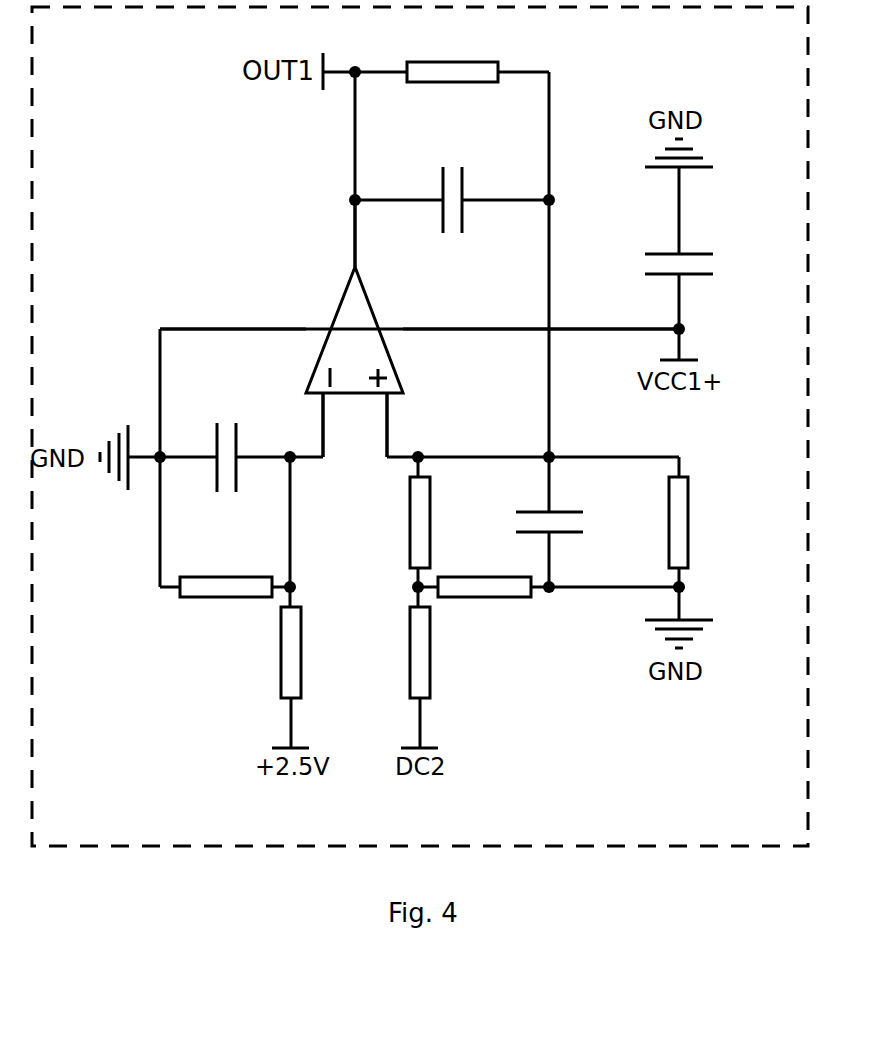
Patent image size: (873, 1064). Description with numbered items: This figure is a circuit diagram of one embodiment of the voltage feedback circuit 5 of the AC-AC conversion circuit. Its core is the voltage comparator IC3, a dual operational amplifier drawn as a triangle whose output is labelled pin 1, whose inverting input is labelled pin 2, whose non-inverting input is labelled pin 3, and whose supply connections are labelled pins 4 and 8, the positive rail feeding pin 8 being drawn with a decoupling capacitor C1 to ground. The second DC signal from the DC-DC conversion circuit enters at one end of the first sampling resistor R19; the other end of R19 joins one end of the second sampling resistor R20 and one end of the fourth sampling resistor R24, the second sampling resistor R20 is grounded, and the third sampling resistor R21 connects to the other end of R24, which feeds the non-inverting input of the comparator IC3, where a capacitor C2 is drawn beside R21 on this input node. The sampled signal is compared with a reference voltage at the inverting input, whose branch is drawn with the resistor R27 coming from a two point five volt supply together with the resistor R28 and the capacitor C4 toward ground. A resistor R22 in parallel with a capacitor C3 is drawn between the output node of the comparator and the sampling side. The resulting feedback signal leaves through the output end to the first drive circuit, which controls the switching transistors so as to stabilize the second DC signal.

The voltage feedback circuit 5 is at (420, 427).
The voltage comparator IC3 is at (403, 338).
The op-amp output pin OUT 1 is at (365, 236).
The op-amp inverting input pin IN- 2 is at (318, 455).
The op-amp non-inverting input pin IN+ 3 is at (382, 456).
The first drive circuit 4 is at (233, 315).
The op-amp supply pin 8 is at (541, 315).
The feedback resistor R22 is at (478, 54).
The feedback capacitor C3 is at (452, 185).
The supply decoupling capacitor C1 is at (696, 263).
The capacitor C4 is at (225, 473).
The resistor R28 is at (225, 605).
The resistor R27 is at (313, 677).
The fourth sampling resistor R24 is at (447, 532).
The second sampling resistor R20 is at (483, 606).
The first sampling resistor R19 is at (442, 677).
The capacitor C2 is at (566, 526).
The third sampling resistor R21 is at (704, 538).